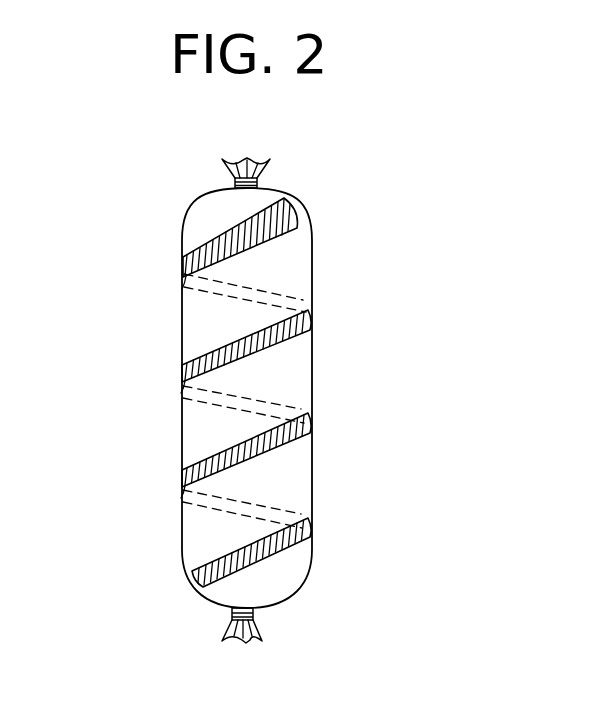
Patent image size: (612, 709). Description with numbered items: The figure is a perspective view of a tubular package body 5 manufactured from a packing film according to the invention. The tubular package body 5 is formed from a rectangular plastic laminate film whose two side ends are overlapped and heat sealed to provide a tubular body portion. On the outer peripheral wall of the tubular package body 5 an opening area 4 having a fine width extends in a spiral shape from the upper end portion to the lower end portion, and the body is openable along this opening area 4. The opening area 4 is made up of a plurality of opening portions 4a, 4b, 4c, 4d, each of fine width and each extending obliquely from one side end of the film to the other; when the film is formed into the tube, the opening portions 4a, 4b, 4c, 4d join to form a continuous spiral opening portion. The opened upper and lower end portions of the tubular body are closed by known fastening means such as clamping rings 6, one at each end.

The opening area 4 is at (197, 242).
The opening portion 4a is at (286, 237).
The opening portion 4b is at (287, 337).
The opening portion 4c is at (287, 440).
The opening portion 4d is at (287, 543).
The tubular package body 5 is at (178, 321).
The clamping ring 6 is at (234, 186).